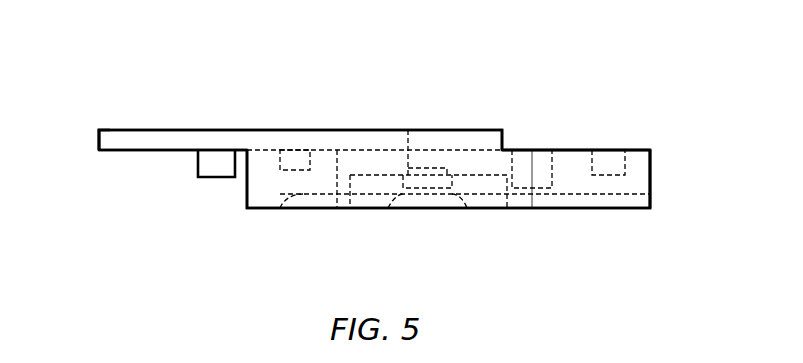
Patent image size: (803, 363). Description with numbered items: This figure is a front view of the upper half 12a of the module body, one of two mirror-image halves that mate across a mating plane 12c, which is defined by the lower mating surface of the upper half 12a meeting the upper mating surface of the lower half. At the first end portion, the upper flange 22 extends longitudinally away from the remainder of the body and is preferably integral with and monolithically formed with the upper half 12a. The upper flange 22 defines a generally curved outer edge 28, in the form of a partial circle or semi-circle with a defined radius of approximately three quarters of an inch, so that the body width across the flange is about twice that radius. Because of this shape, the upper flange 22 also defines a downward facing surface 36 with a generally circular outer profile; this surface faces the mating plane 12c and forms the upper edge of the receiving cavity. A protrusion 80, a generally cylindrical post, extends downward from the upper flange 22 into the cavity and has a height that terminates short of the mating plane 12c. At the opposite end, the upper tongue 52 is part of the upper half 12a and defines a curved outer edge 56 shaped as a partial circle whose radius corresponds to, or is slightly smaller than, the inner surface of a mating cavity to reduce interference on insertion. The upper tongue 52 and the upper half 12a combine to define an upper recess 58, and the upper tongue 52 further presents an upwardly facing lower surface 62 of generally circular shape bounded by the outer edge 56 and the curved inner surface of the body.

The upper half 12a is at (405, 82).
The mating plane 12c is at (323, 208).
The upper flange 22 is at (152, 130).
The curved outer edge 28 is at (98, 145).
The downward facing surface 36 is at (132, 150).
The protrusion 80 is at (213, 178).
The upper recess 58 is at (537, 140).
The upper tongue 52 is at (577, 150).
The upwardly facing lower surface 62 is at (635, 150).
The curved outer edge 56 is at (650, 165).